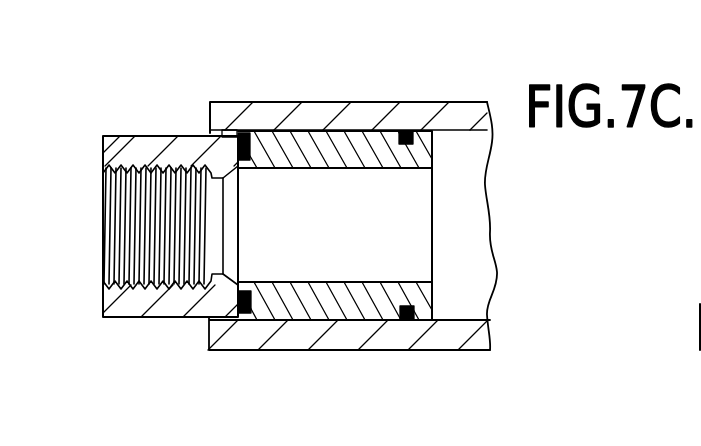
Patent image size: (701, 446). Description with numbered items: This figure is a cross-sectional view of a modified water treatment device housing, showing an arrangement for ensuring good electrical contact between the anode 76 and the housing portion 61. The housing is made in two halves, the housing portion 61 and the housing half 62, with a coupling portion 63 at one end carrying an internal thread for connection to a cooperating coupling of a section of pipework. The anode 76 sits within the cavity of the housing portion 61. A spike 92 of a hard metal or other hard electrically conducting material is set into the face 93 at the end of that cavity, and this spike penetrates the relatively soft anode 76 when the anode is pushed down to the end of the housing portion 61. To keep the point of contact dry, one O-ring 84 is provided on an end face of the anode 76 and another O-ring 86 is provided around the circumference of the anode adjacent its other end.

The housing portion 61 is at (424, 101).
The housing half 62 is at (160, 168).
The coupling portion 63 is at (122, 135).
The anode 76 is at (312, 303).
The O-ring 84 is at (238, 303).
The O-ring 86 is at (403, 131).
The spike 92 is at (230, 130).
The face 93 is at (240, 163).